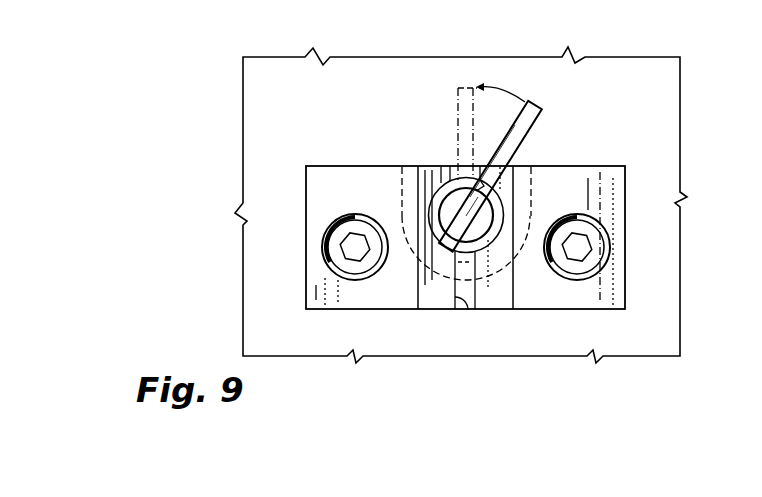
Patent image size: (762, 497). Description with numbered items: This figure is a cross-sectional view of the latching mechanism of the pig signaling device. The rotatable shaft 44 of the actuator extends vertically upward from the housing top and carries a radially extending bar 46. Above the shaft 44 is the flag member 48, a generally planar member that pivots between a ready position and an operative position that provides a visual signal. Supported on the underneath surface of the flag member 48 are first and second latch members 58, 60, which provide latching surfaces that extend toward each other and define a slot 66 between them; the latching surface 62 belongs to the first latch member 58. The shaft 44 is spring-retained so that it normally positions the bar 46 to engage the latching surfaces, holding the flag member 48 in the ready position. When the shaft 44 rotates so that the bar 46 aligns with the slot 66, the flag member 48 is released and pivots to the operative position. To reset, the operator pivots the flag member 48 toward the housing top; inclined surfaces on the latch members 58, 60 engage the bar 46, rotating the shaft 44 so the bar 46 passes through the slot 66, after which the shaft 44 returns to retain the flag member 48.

The rotatable shaft 44 is at (483, 230).
The radially extending bar 46 is at (517, 132).
The flag member 48 is at (662, 130).
The first latch member 58 is at (610, 292).
The second latch member 60 is at (323, 290).
The latching surface 62 is at (468, 310).
The slot 66 is at (465, 173).